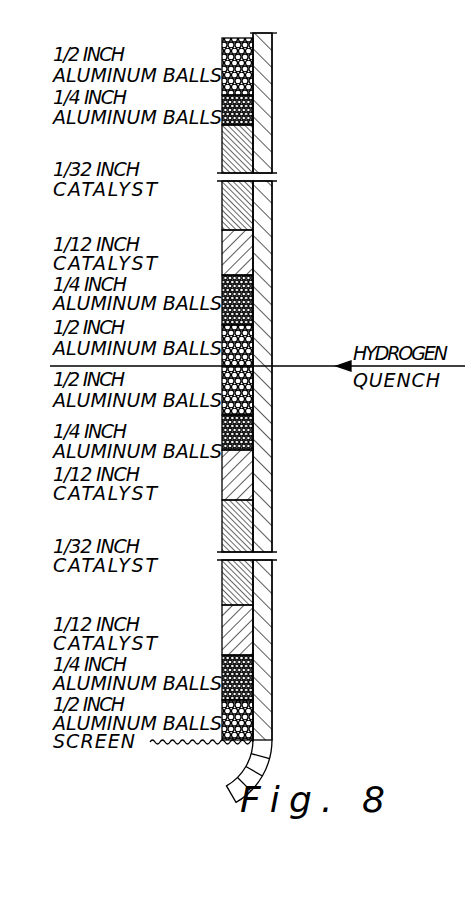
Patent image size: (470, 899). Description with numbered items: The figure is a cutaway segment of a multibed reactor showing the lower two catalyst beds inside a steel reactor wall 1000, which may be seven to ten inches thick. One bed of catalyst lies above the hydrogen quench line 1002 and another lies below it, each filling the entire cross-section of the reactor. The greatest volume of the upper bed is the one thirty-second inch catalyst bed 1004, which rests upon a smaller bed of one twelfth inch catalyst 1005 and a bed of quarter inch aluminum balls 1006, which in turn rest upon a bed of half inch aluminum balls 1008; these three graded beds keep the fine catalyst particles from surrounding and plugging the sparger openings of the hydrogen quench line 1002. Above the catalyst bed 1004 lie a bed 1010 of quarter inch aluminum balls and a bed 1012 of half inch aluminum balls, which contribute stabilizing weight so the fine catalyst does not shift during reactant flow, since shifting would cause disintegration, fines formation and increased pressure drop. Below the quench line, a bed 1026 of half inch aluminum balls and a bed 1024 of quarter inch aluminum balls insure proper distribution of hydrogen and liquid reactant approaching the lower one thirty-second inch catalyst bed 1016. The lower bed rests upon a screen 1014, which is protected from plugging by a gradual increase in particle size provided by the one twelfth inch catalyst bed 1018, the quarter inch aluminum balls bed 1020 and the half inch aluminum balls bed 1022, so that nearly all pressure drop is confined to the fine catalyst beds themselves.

The steel reactor wall 1000 is at (269, 41).
The bed of 1/2 inch aluminum balls 1012 is at (255, 58).
The bed of 1/4 inch aluminum balls 1010 is at (255, 99).
The 1/32 inch catalyst bed 1004 is at (247, 195).
The 1/12 inch catalyst bed 1005 is at (252, 247).
The bed of 1/4 inch aluminum balls 1006 is at (255, 290).
The bed of 1/2 inch aluminum balls 1008 is at (257, 326).
The hydrogen quench line 1002 is at (305, 366).
The bed of 1/2 inch aluminum balls 1026 is at (255, 398).
The bed of 1/4 inch aluminum balls 1024 is at (253, 442).
The 1/32 inch catalyst bed 1016 is at (247, 534).
The 1/12 inch catalyst bed 1018 is at (243, 627).
The bed of 1/4 inch aluminum balls 1020 is at (253, 673).
The bed of 1/2 inch aluminum balls 1022 is at (255, 710).
The screen 1014 is at (177, 744).